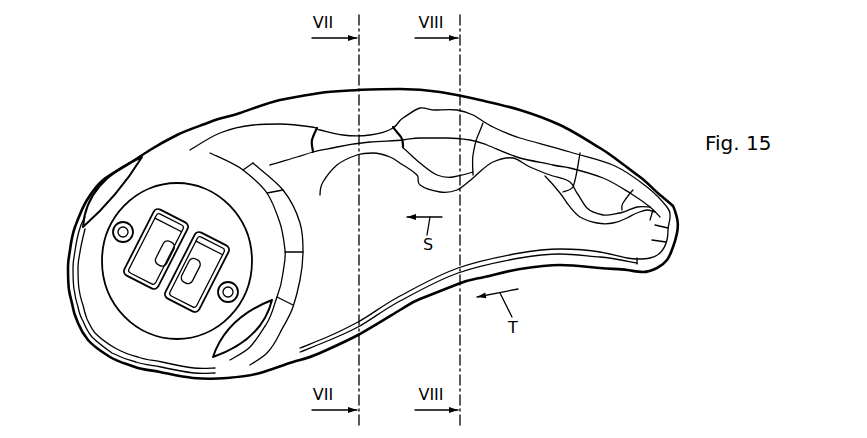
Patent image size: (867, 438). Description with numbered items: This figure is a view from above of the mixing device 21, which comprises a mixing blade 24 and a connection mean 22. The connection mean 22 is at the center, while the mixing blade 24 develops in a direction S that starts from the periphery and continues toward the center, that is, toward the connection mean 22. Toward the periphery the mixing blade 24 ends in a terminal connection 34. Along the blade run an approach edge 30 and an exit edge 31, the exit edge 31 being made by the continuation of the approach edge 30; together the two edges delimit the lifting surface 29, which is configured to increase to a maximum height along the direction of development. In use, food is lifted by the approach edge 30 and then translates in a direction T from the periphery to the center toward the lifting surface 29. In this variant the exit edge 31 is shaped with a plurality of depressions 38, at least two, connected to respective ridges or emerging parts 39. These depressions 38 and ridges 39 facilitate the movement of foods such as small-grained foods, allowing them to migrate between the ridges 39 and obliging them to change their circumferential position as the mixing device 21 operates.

The mixing device 21 is at (535, 58).
The connection mean 22 is at (78, 204).
The mixing blade 24 is at (586, 110).
The lifting surface 29 is at (408, 275).
The approach edge 30 is at (552, 274).
The exit edge 31 is at (317, 128).
The terminal connection 34 is at (688, 232).
The depressions 38 is at (435, 110).
The ridges 39 is at (373, 155).